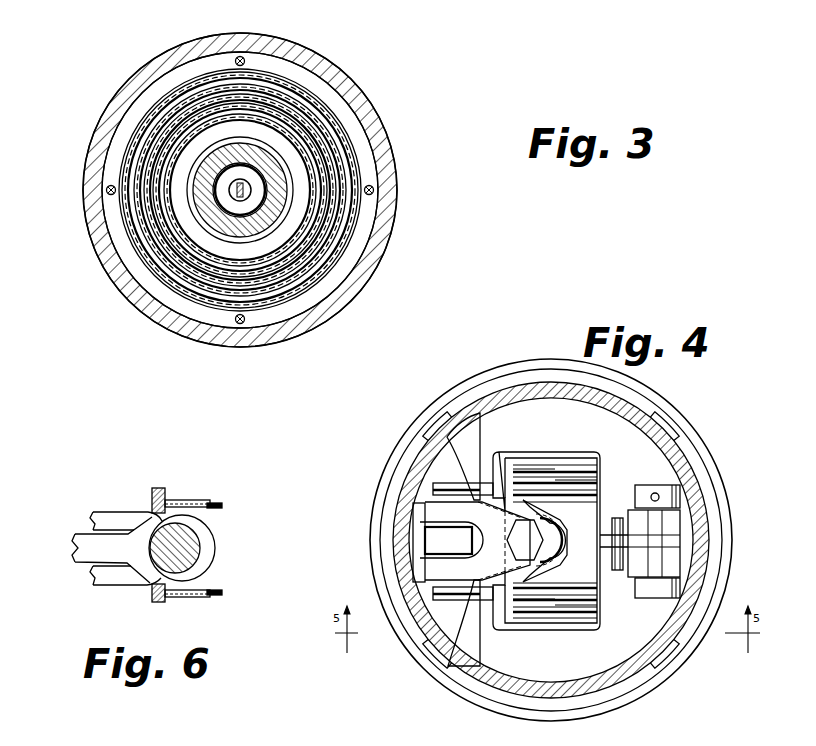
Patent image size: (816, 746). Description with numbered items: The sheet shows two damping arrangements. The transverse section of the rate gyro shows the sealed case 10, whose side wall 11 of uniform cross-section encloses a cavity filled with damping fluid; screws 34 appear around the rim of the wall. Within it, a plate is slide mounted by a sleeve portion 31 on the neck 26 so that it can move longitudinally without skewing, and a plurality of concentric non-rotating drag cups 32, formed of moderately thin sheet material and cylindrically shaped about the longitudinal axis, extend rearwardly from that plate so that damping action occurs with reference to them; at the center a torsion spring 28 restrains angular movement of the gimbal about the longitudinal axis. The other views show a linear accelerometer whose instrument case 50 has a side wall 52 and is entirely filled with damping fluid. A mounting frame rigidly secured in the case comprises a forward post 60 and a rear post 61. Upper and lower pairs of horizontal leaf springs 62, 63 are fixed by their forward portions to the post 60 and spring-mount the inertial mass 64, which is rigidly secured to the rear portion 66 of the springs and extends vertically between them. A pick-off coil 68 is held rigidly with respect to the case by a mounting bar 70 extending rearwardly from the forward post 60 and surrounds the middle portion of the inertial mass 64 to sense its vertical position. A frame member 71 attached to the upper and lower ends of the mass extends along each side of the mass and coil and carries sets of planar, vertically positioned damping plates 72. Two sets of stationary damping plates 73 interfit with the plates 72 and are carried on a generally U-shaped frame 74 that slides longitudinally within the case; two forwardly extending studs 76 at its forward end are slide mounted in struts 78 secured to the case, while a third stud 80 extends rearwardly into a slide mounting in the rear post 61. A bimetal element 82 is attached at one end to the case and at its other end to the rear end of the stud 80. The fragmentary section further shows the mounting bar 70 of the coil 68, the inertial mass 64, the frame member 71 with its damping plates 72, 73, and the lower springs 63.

In FIG. 3, the sealed case 10 is at (390, 103).
In FIG. 3, the side wall 11 is at (394, 162).
In FIG. 3, the mounting screws 34 is at (374, 190).
In FIG. 3, the concentric non-rotating drag cups 32 is at (343, 243).
In FIG. 3, the neck 26 is at (262, 203).
In FIG. 3, the sleeve portion 31 is at (196, 200).
In FIG. 3, the torsion spring 28 is at (246, 195).
In FIG. 4, the instrument case 50 is at (677, 403).
In FIG. 4, the side wall 52 is at (603, 687).
In FIG. 4, the forward upstanding post 60 is at (413, 522).
In FIG. 4, the rear upstanding post 61 is at (616, 515).
In FIG. 4, the upper pair of horizontal leaf springs 62 is at (437, 510).
In FIG. 6, the lower pair of horizontal leaf springs 63 is at (120, 580).
In FIG. 4, the inertial mass 64 is at (545, 560).
In FIG. 6, the inertial mass 64 is at (192, 548).
In FIG. 4, the rear portion of spring 66 is at (552, 513).
In FIG. 4, the pick-off coil 68 is at (545, 540).
In FIG. 6, the pick-off coil 68 is at (206, 530).
In FIG. 6, the mounting bar 70 is at (88, 545).
In FIG. 4, the frame member 71 is at (510, 463).
In FIG. 6, the frame member 71 is at (160, 488).
In FIG. 4, the damping plates 72 is at (547, 620).
In FIG. 6, the damping plates 72 is at (192, 500).
In FIG. 4, the stationary damping plates 73 is at (588, 620).
In FIG. 6, the stationary damping plates 73 is at (215, 503).
In FIG. 4, the U-shaped frame 74 is at (587, 456).
In FIG. 4, the forwardly extending studs 76 is at (489, 482).
In FIG. 4, the struts 78 is at (470, 440).
In FIG. 4, the third stud 80 is at (681, 540).
In FIG. 4, the bimetal element 82 is at (674, 567).